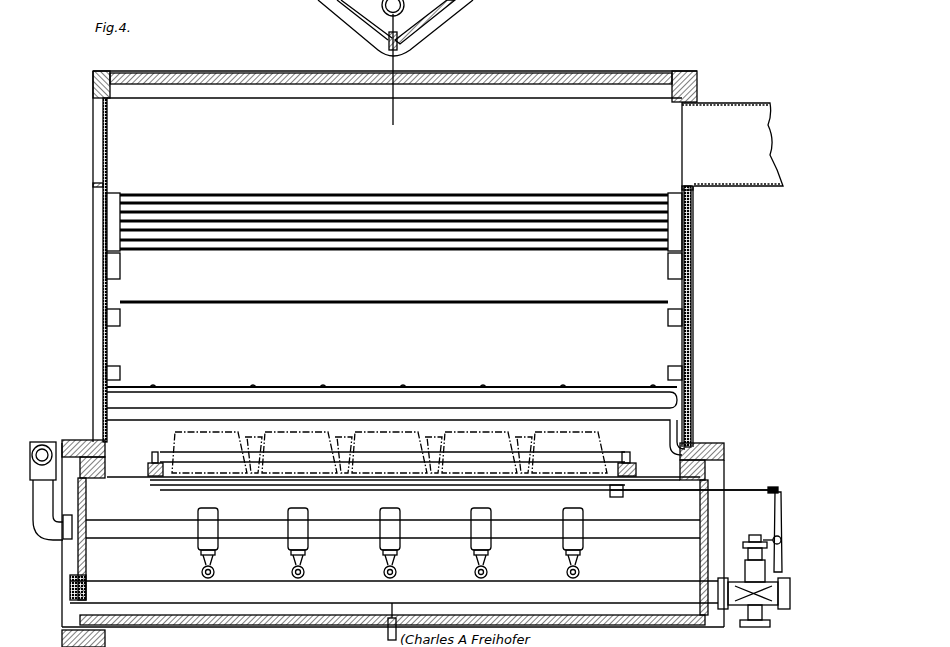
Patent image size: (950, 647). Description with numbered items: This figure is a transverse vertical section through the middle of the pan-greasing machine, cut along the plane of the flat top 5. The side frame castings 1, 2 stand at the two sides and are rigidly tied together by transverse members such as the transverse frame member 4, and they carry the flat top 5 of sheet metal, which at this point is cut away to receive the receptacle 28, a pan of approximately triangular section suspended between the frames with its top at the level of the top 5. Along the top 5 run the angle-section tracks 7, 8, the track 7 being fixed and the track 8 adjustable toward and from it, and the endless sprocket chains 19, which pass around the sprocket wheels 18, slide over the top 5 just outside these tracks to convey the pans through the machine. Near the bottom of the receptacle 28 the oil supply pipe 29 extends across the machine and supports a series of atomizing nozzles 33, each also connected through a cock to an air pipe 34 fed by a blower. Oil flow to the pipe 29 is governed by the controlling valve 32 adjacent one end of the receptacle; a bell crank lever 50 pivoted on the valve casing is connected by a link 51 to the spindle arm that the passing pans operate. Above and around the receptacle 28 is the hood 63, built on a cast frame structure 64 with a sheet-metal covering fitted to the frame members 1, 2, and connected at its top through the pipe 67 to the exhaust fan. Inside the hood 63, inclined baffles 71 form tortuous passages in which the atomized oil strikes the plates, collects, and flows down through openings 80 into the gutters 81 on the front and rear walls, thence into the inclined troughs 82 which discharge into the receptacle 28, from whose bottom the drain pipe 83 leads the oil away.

The side frame casting 1 is at (62, 633).
The side frame casting 2 is at (80, 440).
The transverse frame member 4 is at (392, 66).
The flat top 5 is at (405, 70).
The track 7 is at (628, 458).
The track 8 is at (155, 458).
The sprocket wheel 18 is at (411, 28).
The endless sprocket chain 19 is at (148, 466).
The receptacle 28 is at (160, 623).
The oil supply pipe 29 is at (348, 589).
The controlling valve 32 is at (754, 581).
The atomizing nozzle 33 is at (218, 514).
The air pipe 34 is at (36, 446).
The bell crank lever 50 is at (780, 510).
The link 51 is at (752, 490).
The hood 63 is at (578, 75).
The frame structure 64 is at (298, 75).
The pipe 67 is at (735, 186).
The baffle 71 is at (372, 196).
The opening 80 is at (342, 387).
The gutter 81 is at (372, 392).
The trough 82 is at (671, 433).
The drain pipe 83 is at (389, 47).